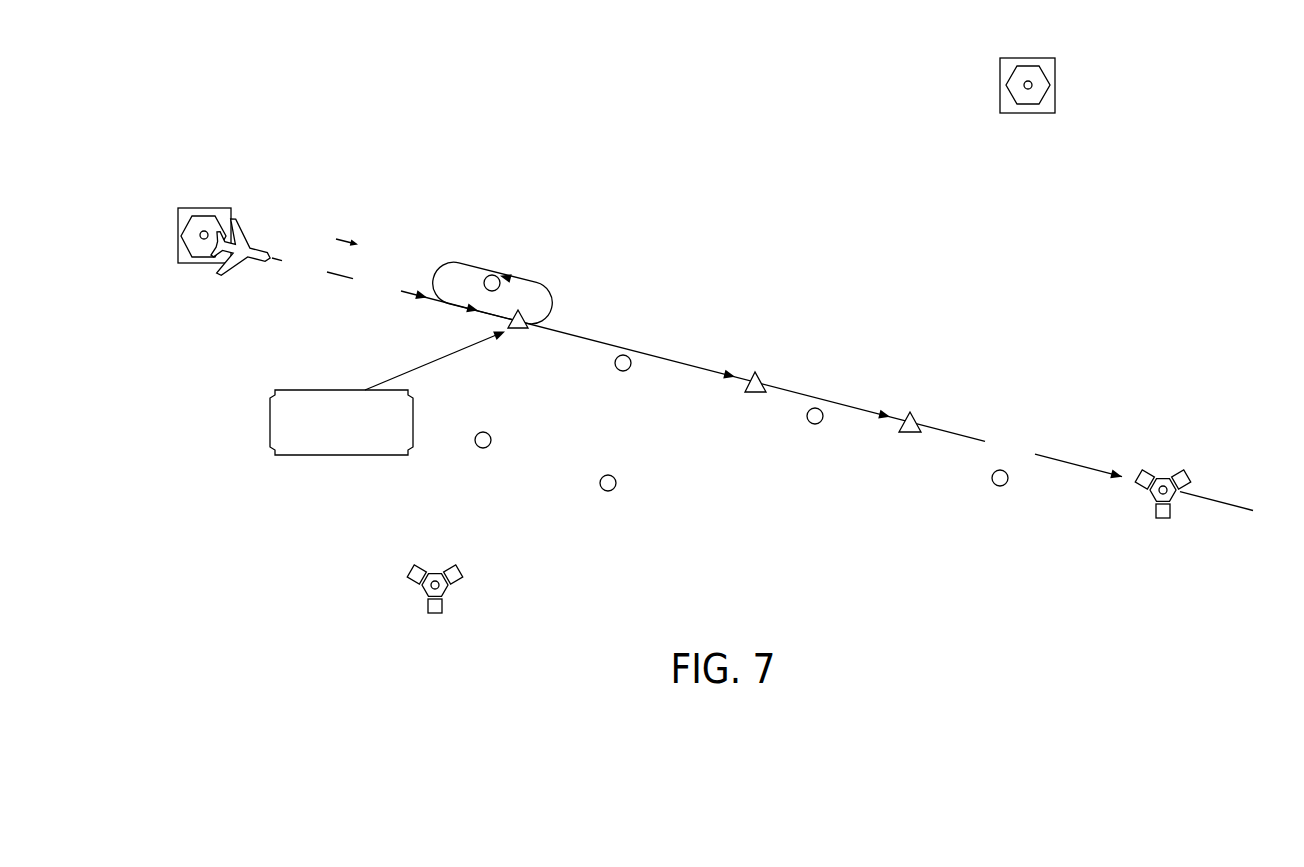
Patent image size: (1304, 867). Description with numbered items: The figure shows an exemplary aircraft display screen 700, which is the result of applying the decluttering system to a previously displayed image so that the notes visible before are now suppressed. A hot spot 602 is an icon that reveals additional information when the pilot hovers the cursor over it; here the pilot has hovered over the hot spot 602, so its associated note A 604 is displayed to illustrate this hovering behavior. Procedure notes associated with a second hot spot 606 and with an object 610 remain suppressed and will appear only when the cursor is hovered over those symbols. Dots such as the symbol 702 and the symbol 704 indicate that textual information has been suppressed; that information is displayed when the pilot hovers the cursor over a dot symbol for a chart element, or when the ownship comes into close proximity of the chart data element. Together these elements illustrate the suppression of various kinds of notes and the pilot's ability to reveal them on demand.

The aircraft display screen 700 is at (715, 282).
The hot spot 602 is at (520, 333).
The note A 604 is at (270, 423).
The hot spot 606 is at (422, 595).
The object 610 is at (1186, 473).
The symbol 702 is at (492, 443).
The symbol 704 is at (617, 486).